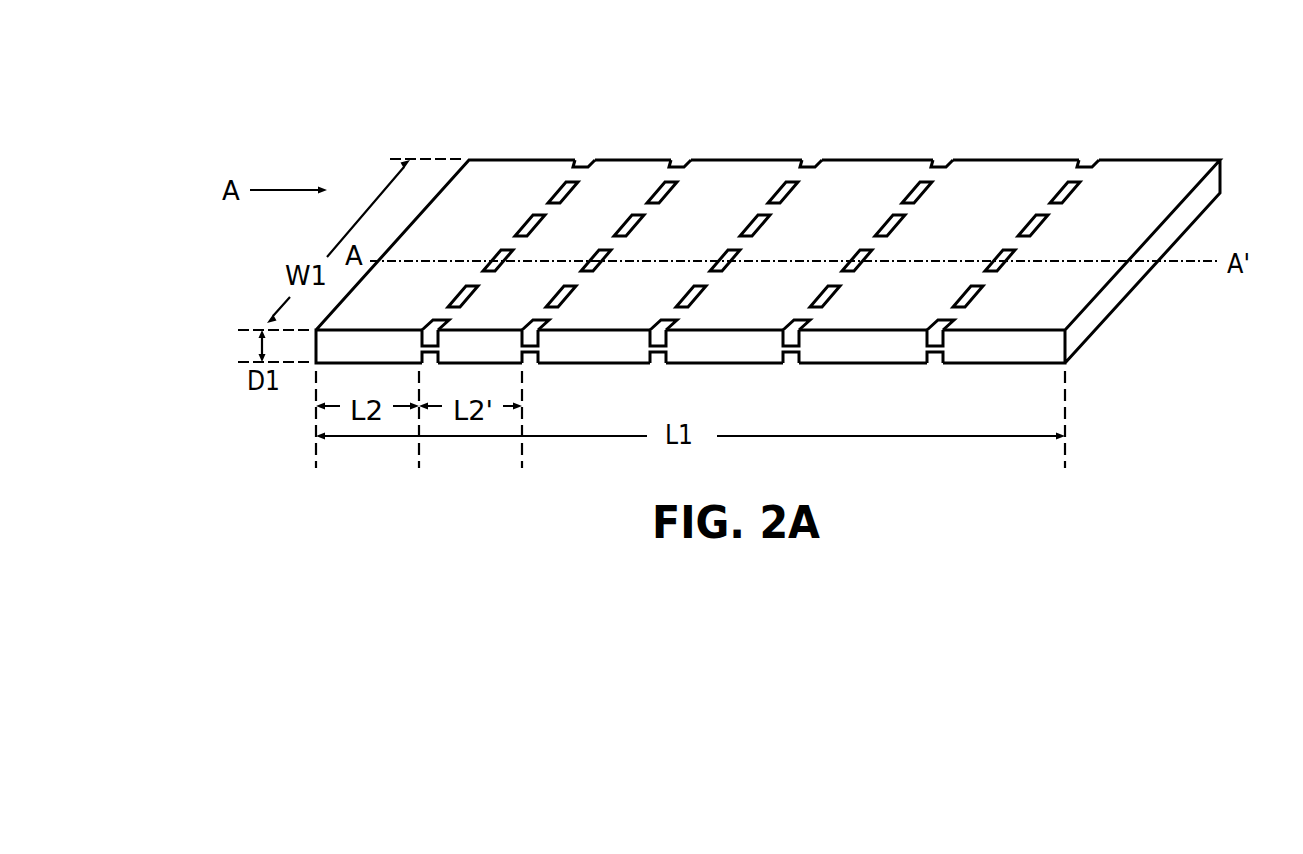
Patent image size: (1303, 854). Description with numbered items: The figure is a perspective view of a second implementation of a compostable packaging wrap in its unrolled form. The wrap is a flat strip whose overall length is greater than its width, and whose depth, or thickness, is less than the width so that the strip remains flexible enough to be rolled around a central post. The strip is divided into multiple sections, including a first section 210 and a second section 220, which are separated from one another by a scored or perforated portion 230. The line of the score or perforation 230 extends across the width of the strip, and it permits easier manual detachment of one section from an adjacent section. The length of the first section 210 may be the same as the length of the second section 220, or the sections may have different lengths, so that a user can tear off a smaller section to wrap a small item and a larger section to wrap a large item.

The first section 210 is at (510, 168).
The second section 220 is at (620, 180).
The scored or perforated portion 230 is at (563, 180).